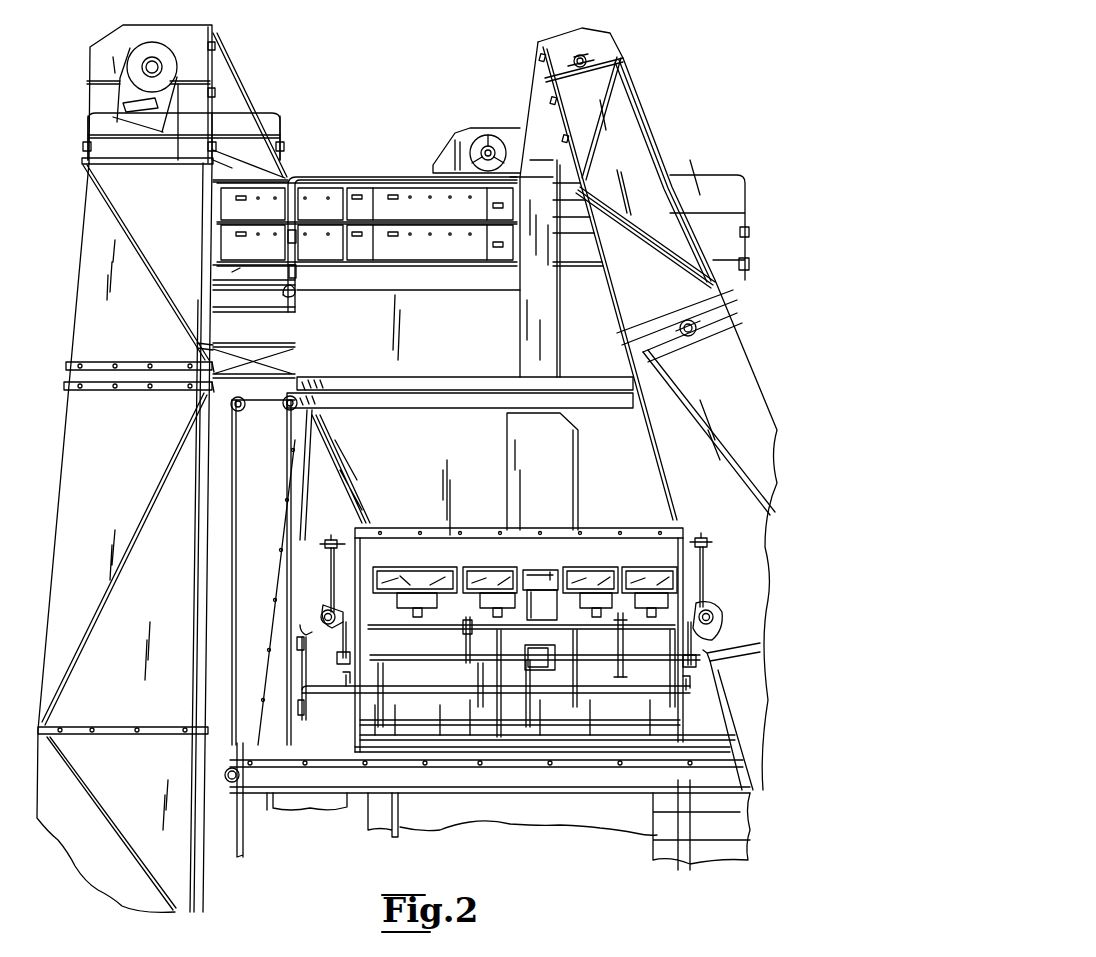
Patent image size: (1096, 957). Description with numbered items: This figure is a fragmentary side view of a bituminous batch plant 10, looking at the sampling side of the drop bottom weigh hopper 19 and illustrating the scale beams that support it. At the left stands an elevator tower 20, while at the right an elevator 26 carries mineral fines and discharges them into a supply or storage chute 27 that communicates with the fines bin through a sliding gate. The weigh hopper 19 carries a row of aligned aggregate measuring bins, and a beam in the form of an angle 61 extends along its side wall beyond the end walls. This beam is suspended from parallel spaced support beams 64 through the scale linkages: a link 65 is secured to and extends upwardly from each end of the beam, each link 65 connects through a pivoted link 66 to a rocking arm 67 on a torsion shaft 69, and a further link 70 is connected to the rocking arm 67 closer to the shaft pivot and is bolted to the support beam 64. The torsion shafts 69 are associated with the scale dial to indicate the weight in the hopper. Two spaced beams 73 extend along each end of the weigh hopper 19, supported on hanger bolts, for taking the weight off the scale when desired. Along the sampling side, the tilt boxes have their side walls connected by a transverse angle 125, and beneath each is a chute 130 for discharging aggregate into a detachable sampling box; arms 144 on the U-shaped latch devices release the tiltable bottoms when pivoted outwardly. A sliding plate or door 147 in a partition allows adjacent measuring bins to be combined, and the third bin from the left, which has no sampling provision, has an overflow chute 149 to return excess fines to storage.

The bituminous batch plant 10 is at (342, 130).
The drop bottom weigh hopper 19 is at (688, 721).
The left elevator tower 20 is at (78, 322).
The elevator 26 is at (660, 148).
The supply or storage chute 27 is at (532, 318).
The angle beam 61 is at (383, 656).
The support beam 64 is at (338, 545).
The link 65 is at (338, 652).
The pivoted link 66 is at (317, 670).
The rocking arm 67 is at (320, 622).
The torsion shaft 69 is at (318, 613).
The link 70 is at (335, 575).
The beam 73 is at (346, 684).
The transverse angle 125 is at (507, 567).
The chute 130 is at (442, 612).
The arm 144 is at (422, 590).
The sliding plate or door 147 is at (458, 676).
The overflow chute 149 is at (550, 658).